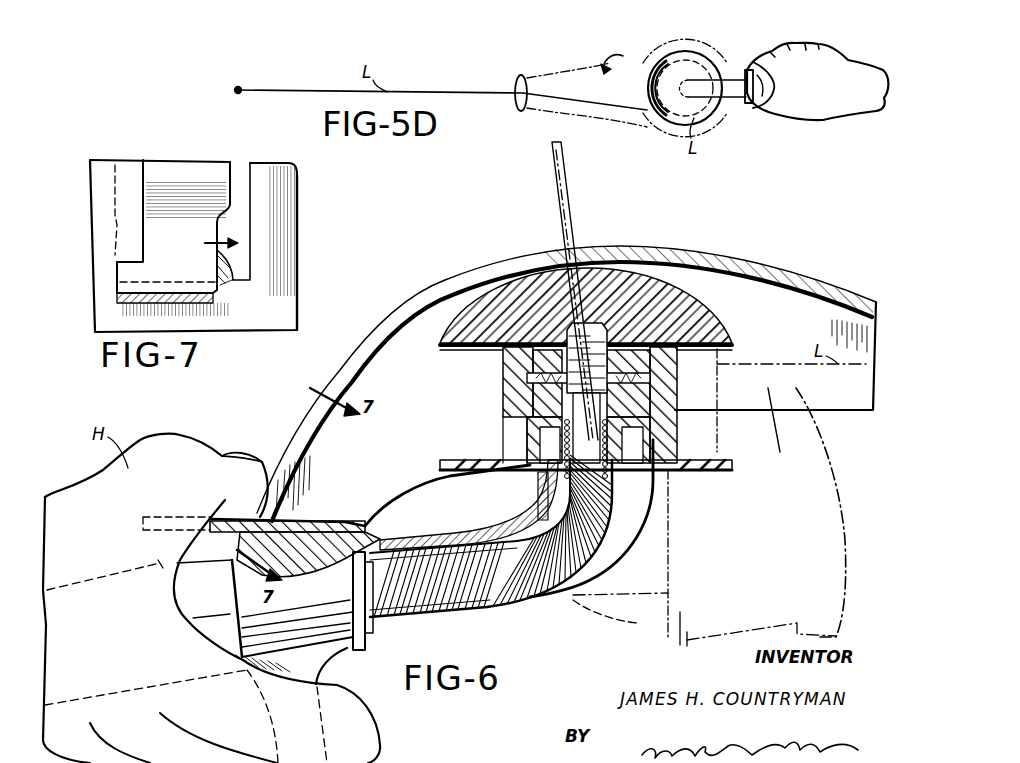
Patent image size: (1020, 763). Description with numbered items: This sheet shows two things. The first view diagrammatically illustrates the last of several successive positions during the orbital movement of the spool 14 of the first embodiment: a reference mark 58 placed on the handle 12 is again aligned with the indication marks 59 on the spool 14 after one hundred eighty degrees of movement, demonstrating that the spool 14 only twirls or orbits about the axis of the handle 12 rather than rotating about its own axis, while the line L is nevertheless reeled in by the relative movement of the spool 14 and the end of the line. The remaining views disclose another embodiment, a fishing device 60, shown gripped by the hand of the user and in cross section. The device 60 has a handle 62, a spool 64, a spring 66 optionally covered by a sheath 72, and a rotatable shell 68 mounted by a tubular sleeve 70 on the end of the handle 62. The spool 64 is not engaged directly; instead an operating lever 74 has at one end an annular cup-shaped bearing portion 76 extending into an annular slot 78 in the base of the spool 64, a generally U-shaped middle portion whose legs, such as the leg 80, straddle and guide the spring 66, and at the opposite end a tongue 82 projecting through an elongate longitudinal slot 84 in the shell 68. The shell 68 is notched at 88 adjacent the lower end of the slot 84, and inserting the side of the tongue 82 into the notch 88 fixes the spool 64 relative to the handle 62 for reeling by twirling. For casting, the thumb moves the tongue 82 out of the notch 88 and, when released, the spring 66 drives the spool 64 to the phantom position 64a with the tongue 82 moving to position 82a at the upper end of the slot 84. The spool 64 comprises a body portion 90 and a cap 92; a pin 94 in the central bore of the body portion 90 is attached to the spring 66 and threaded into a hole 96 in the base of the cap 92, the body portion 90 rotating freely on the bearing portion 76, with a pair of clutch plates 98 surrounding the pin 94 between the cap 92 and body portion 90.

In FIG. 5D, the handle 12 is at (755, 98).
In FIG. 5D, the spool 14 is at (713, 50).
In FIG. 5D, the reference mark 58 is at (748, 68).
In FIG. 5D, the indication marks 59 is at (663, 90).
In FIG. 7, the fishing device 60 is at (86, 214).
In FIG. 6, the fishing device 60 is at (436, 296).
In FIG. 6, the handle 62 is at (190, 574).
In FIG. 6, the spool 64 is at (730, 321).
In FIG. 6, the phantom line position of spool 64a is at (824, 514).
In FIG. 6, the spring 66 is at (478, 609).
In FIG. 7, the rotatable shell 68 is at (283, 296).
In FIG. 6, the rotatable shell 68 is at (673, 258).
In FIG. 7, the tubular sleeve 70 is at (222, 273).
In FIG. 6, the tubular sleeve 70 is at (345, 637).
In FIG. 6, the sheath 72 is at (433, 612).
In FIG. 7, the operating lever 74 is at (193, 160).
In FIG. 6, the operating lever 74 is at (452, 540).
In FIG. 6, the bearing portion 76 is at (530, 472).
In FIG. 6, the annular slot 78 is at (640, 424).
In FIG. 6, the guide leg 80 is at (620, 557).
In FIG. 7, the tongue 82 is at (115, 290).
In FIG. 6, the tongue 82 is at (315, 521).
In FIG. 6, the tongue position 82a is at (568, 202).
In FIG. 7, the elongate slot 84 is at (238, 203).
In FIG. 6, the elongate slot 84 is at (359, 370).
In FIG. 7, the notch 88 is at (117, 255).
In FIG. 6, the notch 88 is at (261, 517).
In FIG. 6, the body portion 90 is at (537, 392).
In FIG. 6, the cap 92 is at (668, 314).
In FIG. 6, the pin 94 is at (603, 360).
In FIG. 6, the hole 96 is at (588, 340).
In FIG. 6, the clutch plates 98 is at (527, 376).